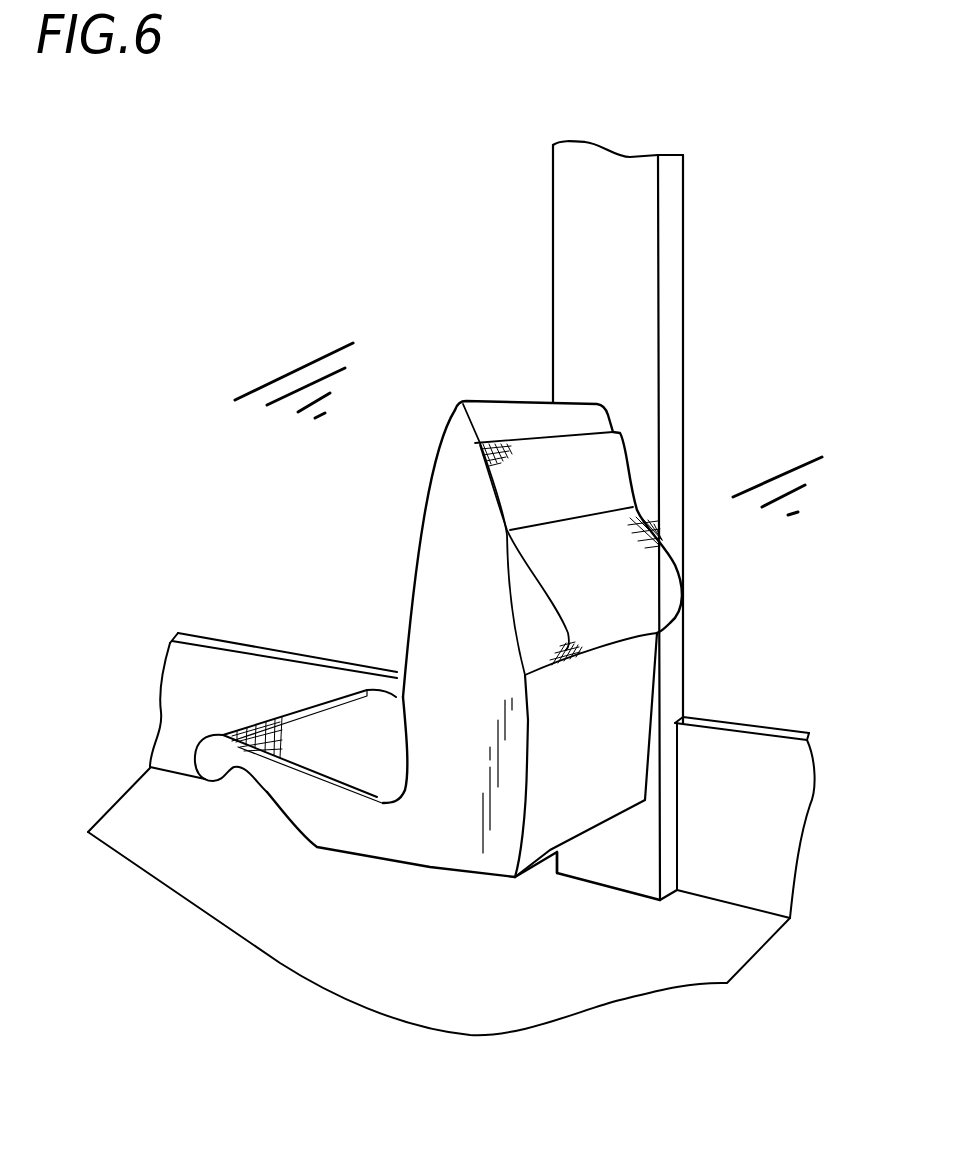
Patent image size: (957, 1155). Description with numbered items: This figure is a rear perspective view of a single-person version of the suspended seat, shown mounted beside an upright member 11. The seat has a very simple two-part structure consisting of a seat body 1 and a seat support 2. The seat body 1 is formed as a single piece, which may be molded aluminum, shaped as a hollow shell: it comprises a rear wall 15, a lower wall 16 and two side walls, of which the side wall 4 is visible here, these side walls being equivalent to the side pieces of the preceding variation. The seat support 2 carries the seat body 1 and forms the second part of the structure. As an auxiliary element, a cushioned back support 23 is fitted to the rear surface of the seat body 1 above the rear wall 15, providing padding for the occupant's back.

The seat body 1 is at (509, 676).
The seat support 2 is at (317, 733).
The side wall 4 is at (437, 820).
The pillar 11 is at (613, 212).
The rear wall 15 is at (605, 717).
The lower wall 16 is at (352, 852).
The cushioned back support 23 is at (632, 582).